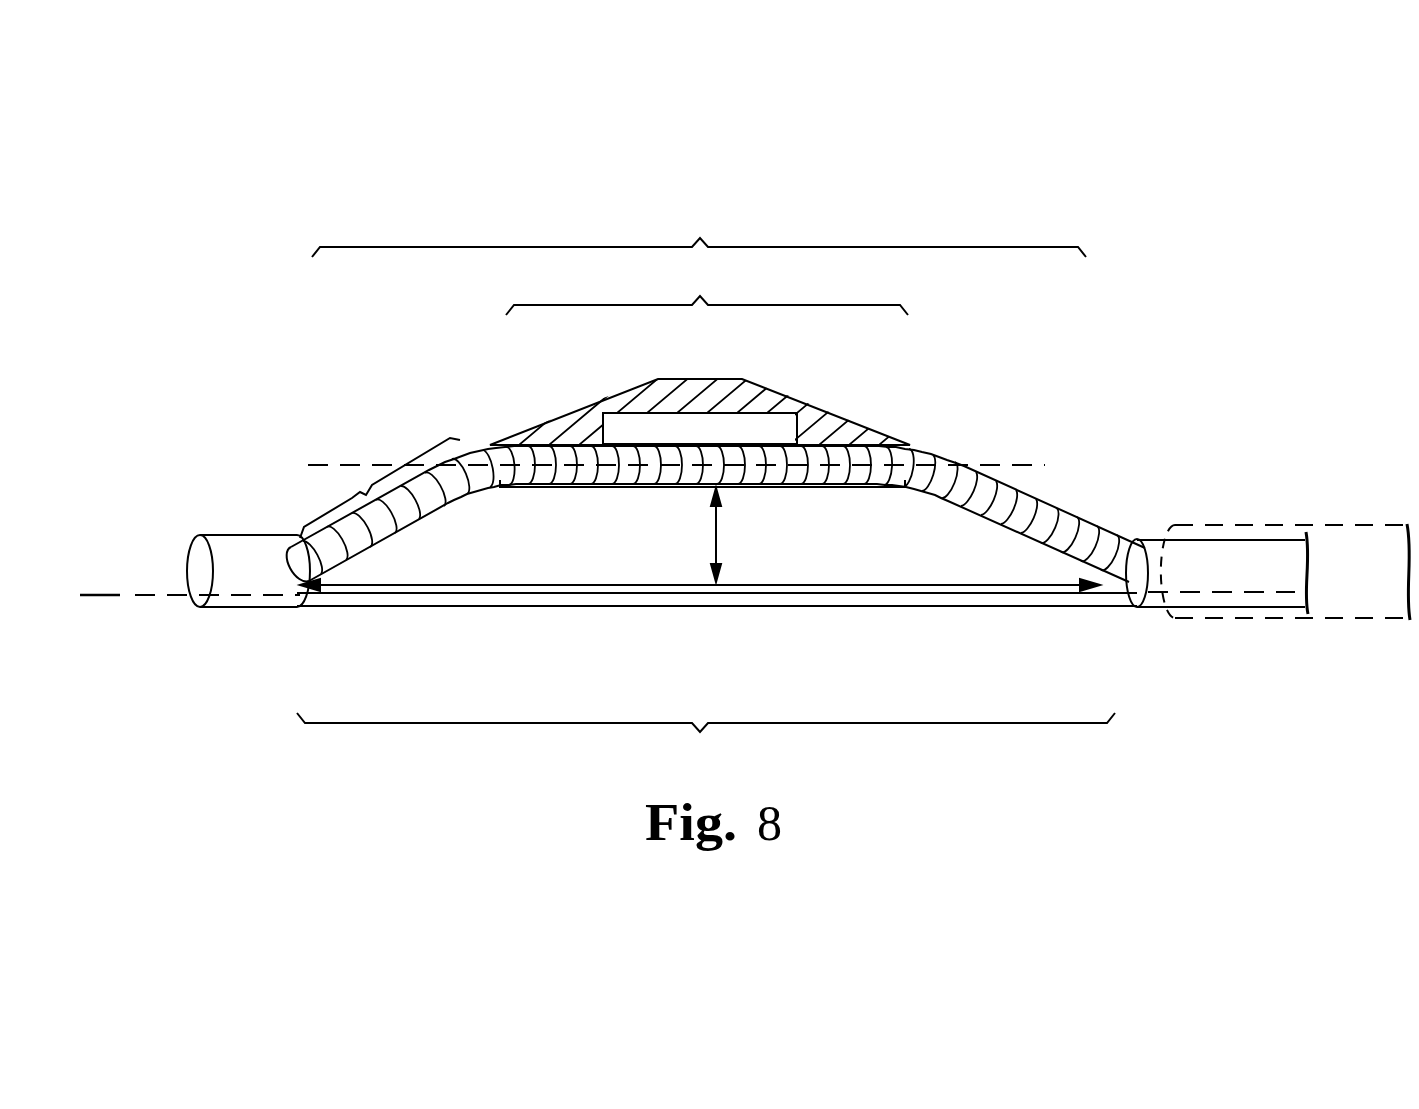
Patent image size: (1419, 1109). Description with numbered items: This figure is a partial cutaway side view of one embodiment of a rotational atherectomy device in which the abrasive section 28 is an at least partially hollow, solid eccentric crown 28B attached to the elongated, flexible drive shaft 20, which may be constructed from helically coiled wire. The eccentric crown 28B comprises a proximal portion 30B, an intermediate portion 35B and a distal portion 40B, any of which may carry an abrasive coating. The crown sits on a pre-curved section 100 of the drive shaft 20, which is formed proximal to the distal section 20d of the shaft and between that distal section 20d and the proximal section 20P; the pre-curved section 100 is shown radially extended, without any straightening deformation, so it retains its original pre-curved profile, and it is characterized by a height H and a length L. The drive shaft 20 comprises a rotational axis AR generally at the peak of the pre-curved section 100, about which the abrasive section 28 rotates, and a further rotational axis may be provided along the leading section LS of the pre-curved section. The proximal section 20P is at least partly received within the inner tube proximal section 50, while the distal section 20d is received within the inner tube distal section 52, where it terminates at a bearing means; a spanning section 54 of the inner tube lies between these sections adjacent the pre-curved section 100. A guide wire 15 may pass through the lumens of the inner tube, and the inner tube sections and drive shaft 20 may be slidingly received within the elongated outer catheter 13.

The pre-curved section 100 is at (706, 486).
The abrasive section 28 is at (692, 374).
The eccentric crown 28B is at (912, 400).
The proximal portion 30B is at (597, 402).
The intermediate portion 35B is at (700, 379).
The distal portion 40B is at (800, 396).
The drive shaft 20 is at (1043, 503).
The rotational axis AR is at (312, 462).
The leading section of pre-curved section LS is at (380, 488).
The inner tube distal section 52 is at (222, 536).
The guide wire 15 is at (166, 600).
The distal section of drive shaft 20d is at (305, 567).
The spanning section 54 is at (520, 593).
The length L is at (715, 585).
The height H is at (716, 543).
The proximal section of drive shaft 20P is at (1120, 577).
The inner tube proximal section 50 is at (1203, 550).
The outer catheter 13 is at (1352, 538).